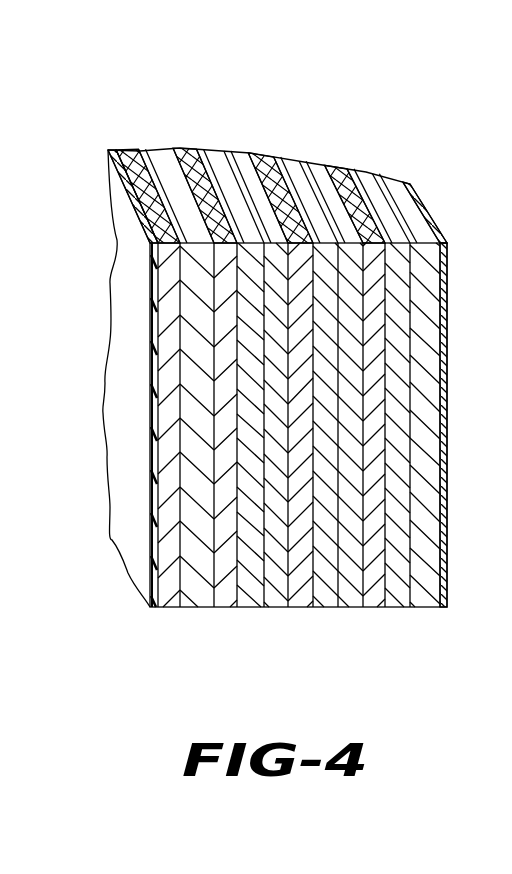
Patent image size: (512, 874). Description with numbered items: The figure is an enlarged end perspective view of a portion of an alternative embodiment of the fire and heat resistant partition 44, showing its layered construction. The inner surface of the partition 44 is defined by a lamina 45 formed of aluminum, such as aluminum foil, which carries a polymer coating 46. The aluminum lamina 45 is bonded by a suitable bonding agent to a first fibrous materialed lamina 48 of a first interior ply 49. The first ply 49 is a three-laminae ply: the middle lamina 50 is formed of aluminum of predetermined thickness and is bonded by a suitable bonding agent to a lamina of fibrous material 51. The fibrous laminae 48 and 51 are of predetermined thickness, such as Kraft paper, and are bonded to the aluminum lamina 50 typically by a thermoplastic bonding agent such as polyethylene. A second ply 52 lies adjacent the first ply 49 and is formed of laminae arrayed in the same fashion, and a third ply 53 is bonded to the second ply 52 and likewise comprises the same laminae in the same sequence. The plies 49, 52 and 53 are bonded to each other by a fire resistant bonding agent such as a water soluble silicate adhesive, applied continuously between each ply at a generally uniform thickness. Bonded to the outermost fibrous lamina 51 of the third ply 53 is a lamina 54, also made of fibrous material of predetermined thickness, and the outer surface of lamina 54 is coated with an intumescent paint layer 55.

The partition 44 is at (273, 78).
The lamina 45 is at (113, 152).
The polymer coating 46 is at (110, 176).
The first fibrous materialed lamina 48 is at (145, 153).
The first interior ply 49 is at (127, 137).
The lamina 50 is at (172, 152).
The lamina of fibrous material 51 is at (195, 148).
The second ply 52 is at (213, 147).
The third ply 53 is at (371, 163).
The lamina 54 is at (398, 180).
The intumescent paint layer 55 is at (436, 221).